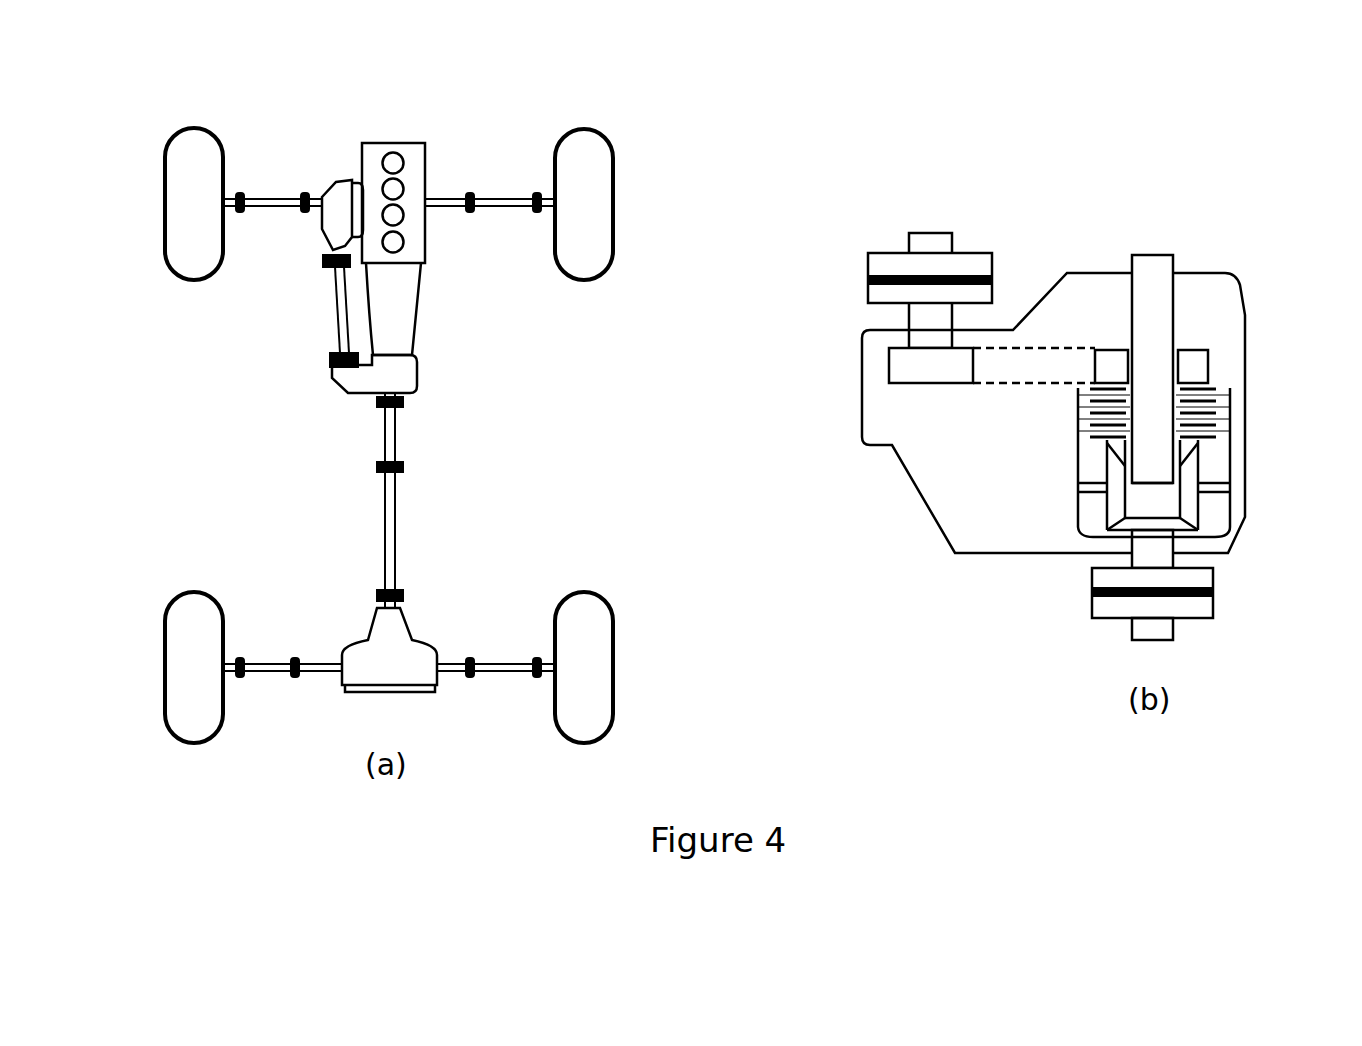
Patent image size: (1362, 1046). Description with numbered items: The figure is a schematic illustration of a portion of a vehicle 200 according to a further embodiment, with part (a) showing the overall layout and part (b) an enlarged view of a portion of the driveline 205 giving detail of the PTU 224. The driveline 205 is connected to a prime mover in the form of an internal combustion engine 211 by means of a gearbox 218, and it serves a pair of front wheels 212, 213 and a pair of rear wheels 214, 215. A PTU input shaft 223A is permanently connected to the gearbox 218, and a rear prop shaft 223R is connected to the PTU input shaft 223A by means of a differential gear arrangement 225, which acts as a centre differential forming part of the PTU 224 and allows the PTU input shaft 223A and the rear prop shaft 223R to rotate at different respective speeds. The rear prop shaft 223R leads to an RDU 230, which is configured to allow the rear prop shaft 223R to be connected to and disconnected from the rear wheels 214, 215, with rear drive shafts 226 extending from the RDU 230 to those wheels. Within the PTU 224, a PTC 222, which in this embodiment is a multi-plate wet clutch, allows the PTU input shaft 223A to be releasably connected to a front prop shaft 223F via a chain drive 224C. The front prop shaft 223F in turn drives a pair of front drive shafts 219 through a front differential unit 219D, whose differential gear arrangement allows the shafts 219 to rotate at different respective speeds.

The vehicle 200 is at (546, 89).
The driveline 205 is at (460, 449).
The internal combustion engine 211 is at (413, 155).
The front wheel 212 is at (188, 158).
The front wheel 213 is at (593, 157).
The rear wheel 214 is at (187, 713).
The rear wheel 215 is at (595, 715).
The gearbox 218 is at (403, 323).
The front drive shaft 219 is at (278, 200).
The front differential unit 219D is at (340, 180).
The PTC 222 is at (1228, 400).
The PTU input shaft 223A is at (1170, 265).
The front prop shaft 223F is at (338, 302).
The rear prop shaft 223R is at (393, 512).
The PTU 224 is at (337, 375).
The chain drive 224C is at (995, 348).
The differential gear arrangement 225 is at (1218, 505).
The rear drive shaft 226 is at (270, 672).
The RDU 230 is at (408, 630).